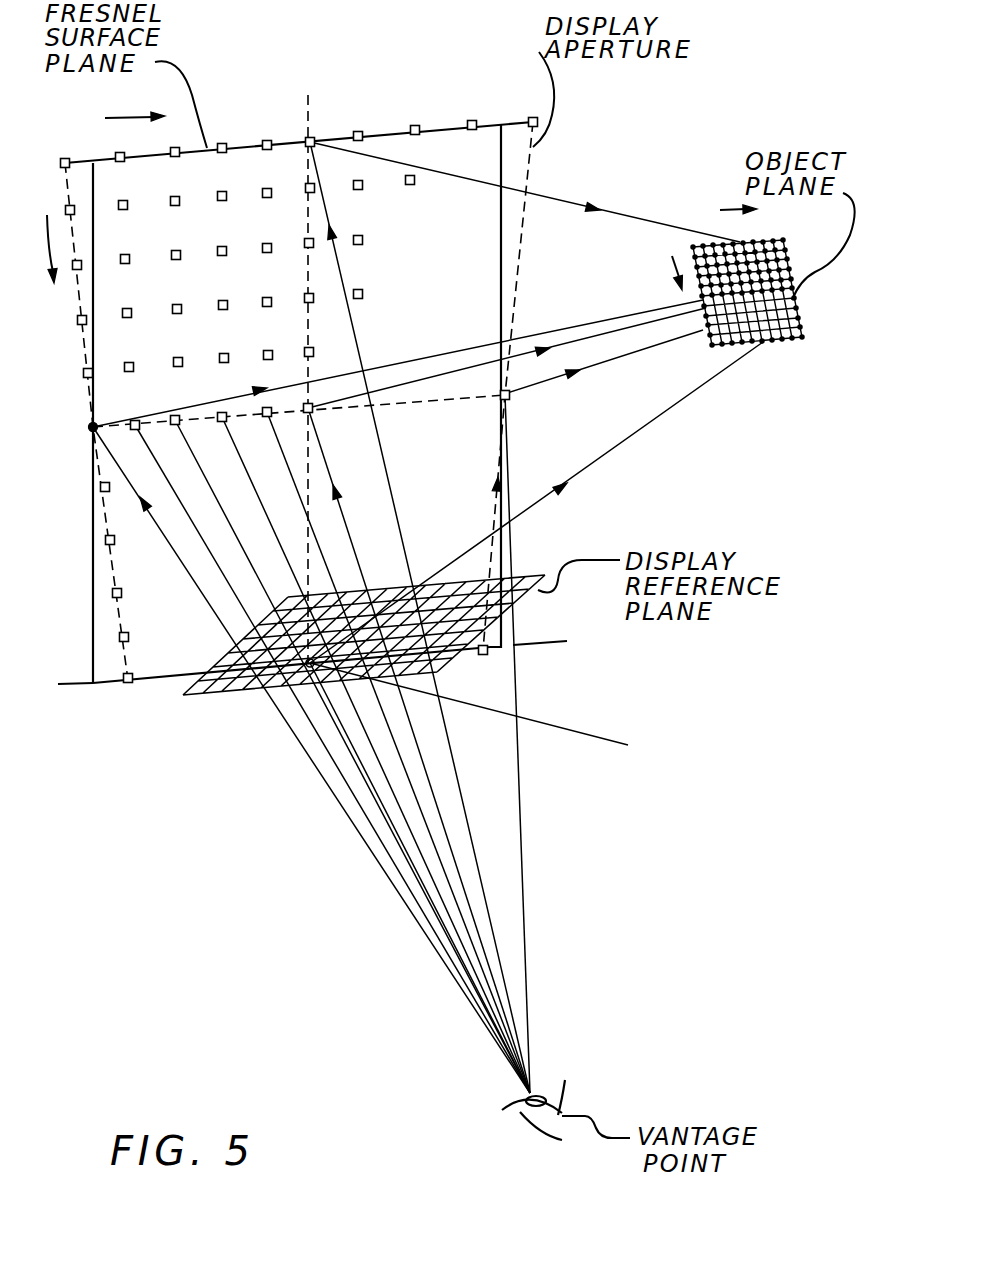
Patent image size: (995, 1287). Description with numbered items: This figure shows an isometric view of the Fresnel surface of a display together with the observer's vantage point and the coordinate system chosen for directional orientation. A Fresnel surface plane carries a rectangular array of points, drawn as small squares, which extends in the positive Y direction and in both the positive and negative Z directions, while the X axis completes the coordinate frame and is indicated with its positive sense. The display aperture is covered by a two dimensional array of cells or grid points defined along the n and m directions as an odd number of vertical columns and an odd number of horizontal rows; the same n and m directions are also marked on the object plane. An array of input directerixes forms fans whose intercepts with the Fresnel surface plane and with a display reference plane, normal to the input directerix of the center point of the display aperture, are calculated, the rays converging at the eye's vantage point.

The Y axis Y is at (308, 367).
The X axis X is at (493, 713).
The Z axis Z is at (313, 663).
The m direction m is at (417, 165).
The n direction n is at (359, 238).